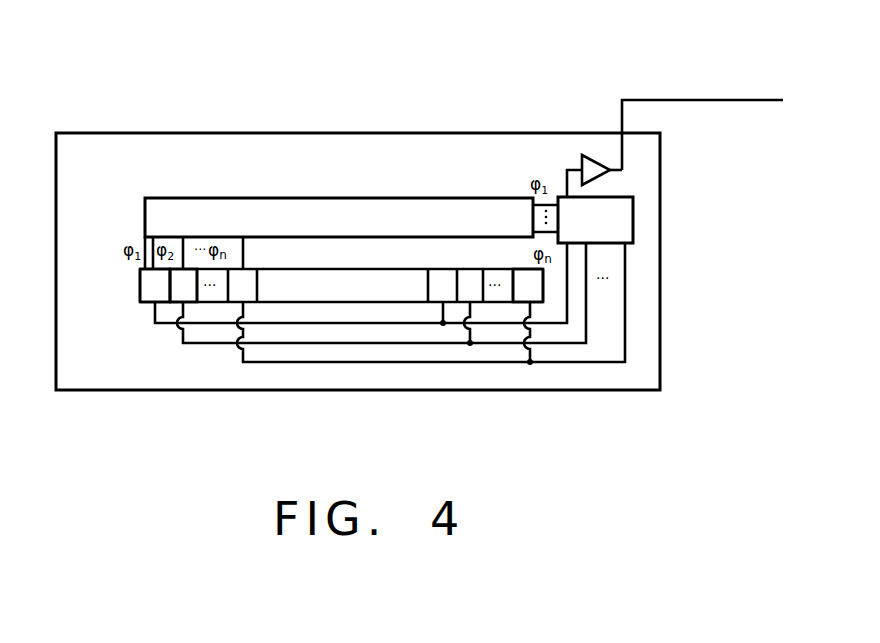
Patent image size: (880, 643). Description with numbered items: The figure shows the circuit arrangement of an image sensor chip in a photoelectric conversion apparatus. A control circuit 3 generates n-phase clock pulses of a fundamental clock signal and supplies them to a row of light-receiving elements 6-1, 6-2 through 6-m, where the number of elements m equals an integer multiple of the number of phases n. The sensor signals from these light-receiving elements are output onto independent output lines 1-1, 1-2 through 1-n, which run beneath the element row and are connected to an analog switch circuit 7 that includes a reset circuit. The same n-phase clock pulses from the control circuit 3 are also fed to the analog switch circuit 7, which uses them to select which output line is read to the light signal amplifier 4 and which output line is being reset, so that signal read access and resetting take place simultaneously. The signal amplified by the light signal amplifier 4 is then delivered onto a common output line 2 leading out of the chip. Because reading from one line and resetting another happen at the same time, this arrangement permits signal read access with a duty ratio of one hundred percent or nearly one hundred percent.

The common output line 2 is at (705, 100).
The control circuit 3 is at (318, 197).
The light signal amplifier 4 is at (581, 160).
The analog switch circuit 7 is at (628, 222).
The light-receiving element 6-1 is at (150, 292).
The light-receiving element 6-2 is at (181, 291).
The light-receiving element 6-m is at (533, 293).
The output line 1-1 is at (266, 325).
The output line 1-2 is at (332, 345).
The output line 1-n is at (403, 362).